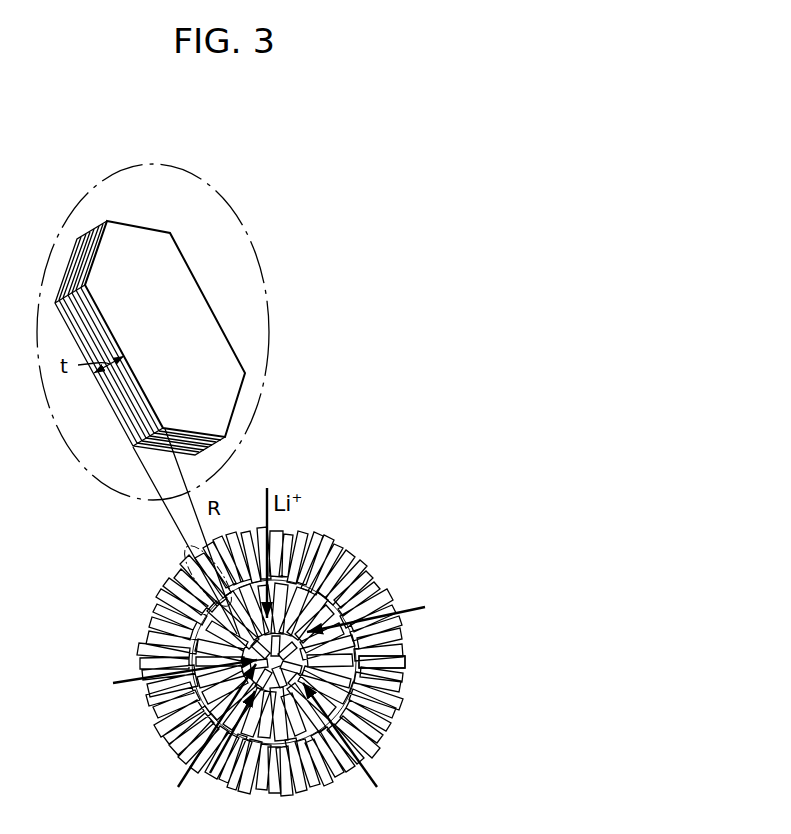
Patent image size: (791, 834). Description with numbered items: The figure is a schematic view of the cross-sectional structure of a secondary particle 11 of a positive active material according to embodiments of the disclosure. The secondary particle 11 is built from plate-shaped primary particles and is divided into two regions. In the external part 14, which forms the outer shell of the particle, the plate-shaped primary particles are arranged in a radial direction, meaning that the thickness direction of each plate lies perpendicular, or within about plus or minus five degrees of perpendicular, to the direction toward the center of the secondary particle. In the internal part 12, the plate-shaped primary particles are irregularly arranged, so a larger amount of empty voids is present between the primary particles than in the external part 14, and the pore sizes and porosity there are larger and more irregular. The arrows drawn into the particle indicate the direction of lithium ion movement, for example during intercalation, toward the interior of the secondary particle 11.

The secondary particle 11 is at (388, 524).
The internal part 12 is at (406, 664).
The external part 14 is at (383, 588).